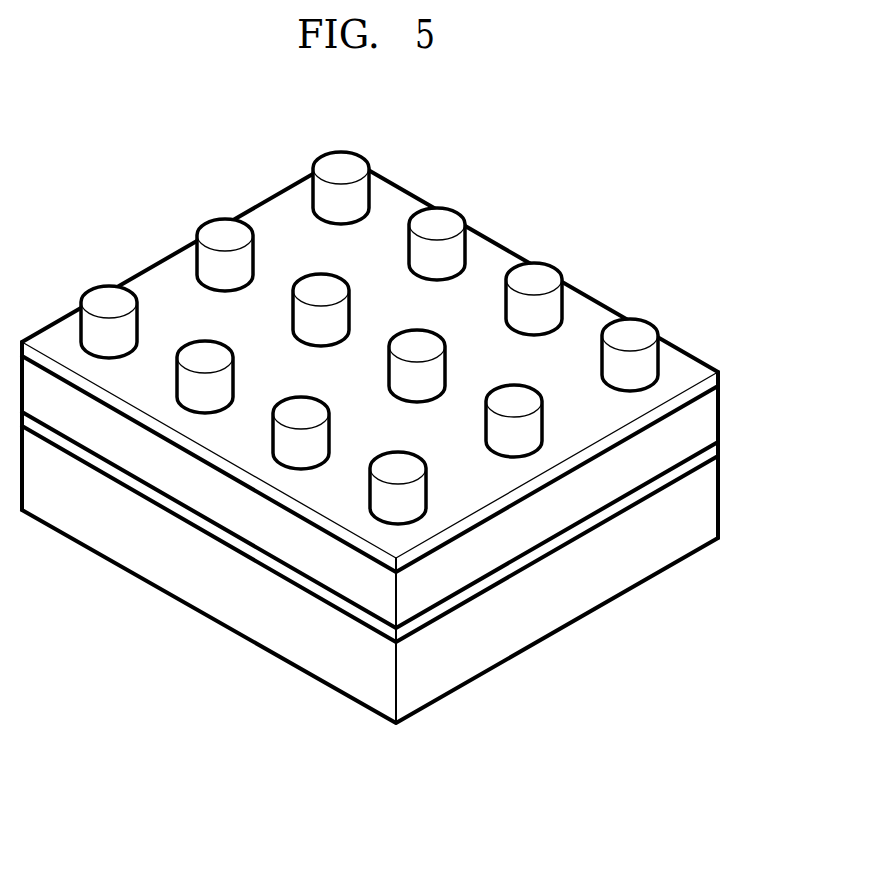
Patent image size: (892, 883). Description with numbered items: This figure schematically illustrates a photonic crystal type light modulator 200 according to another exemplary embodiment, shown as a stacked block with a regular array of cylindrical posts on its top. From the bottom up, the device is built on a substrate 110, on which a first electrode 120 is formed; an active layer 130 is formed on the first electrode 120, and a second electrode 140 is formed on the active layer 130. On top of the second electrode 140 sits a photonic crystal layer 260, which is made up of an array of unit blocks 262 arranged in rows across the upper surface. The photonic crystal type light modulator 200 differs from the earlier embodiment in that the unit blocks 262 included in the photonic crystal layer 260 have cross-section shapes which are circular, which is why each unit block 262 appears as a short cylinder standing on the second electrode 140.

The photonic crystal type light modulator 200 is at (123, 190).
The substrate 110 is at (718, 505).
The first electrode 120 is at (718, 452).
The active layer 130 is at (718, 418).
The second electrode 140 is at (718, 382).
The photonic crystal layer 260 is at (575, 258).
The unit block 262 is at (443, 220).